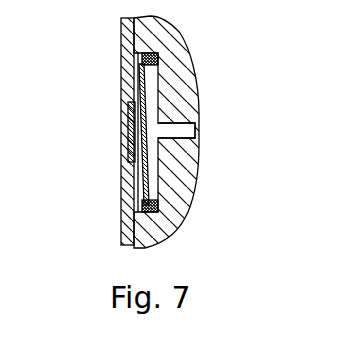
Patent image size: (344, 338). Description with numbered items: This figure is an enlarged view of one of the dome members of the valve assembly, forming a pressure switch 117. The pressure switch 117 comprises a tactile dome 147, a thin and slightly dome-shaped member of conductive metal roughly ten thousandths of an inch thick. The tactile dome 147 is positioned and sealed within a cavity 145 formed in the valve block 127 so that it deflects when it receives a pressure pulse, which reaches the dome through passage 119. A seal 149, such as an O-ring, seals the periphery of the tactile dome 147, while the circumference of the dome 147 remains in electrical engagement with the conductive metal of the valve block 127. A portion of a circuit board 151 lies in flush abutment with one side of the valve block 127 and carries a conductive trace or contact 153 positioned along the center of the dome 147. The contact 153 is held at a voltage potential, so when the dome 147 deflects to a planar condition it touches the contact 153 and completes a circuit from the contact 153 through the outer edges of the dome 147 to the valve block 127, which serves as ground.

The pressure switch 117 is at (116, 91).
The fluid passage 119 is at (172, 137).
The valve block 127 is at (134, 228).
The cavity 145 is at (141, 96).
The tactile dome 147 is at (143, 204).
The seal 149 is at (143, 60).
The circuit board 151 is at (122, 30).
The contact 153 is at (129, 138).